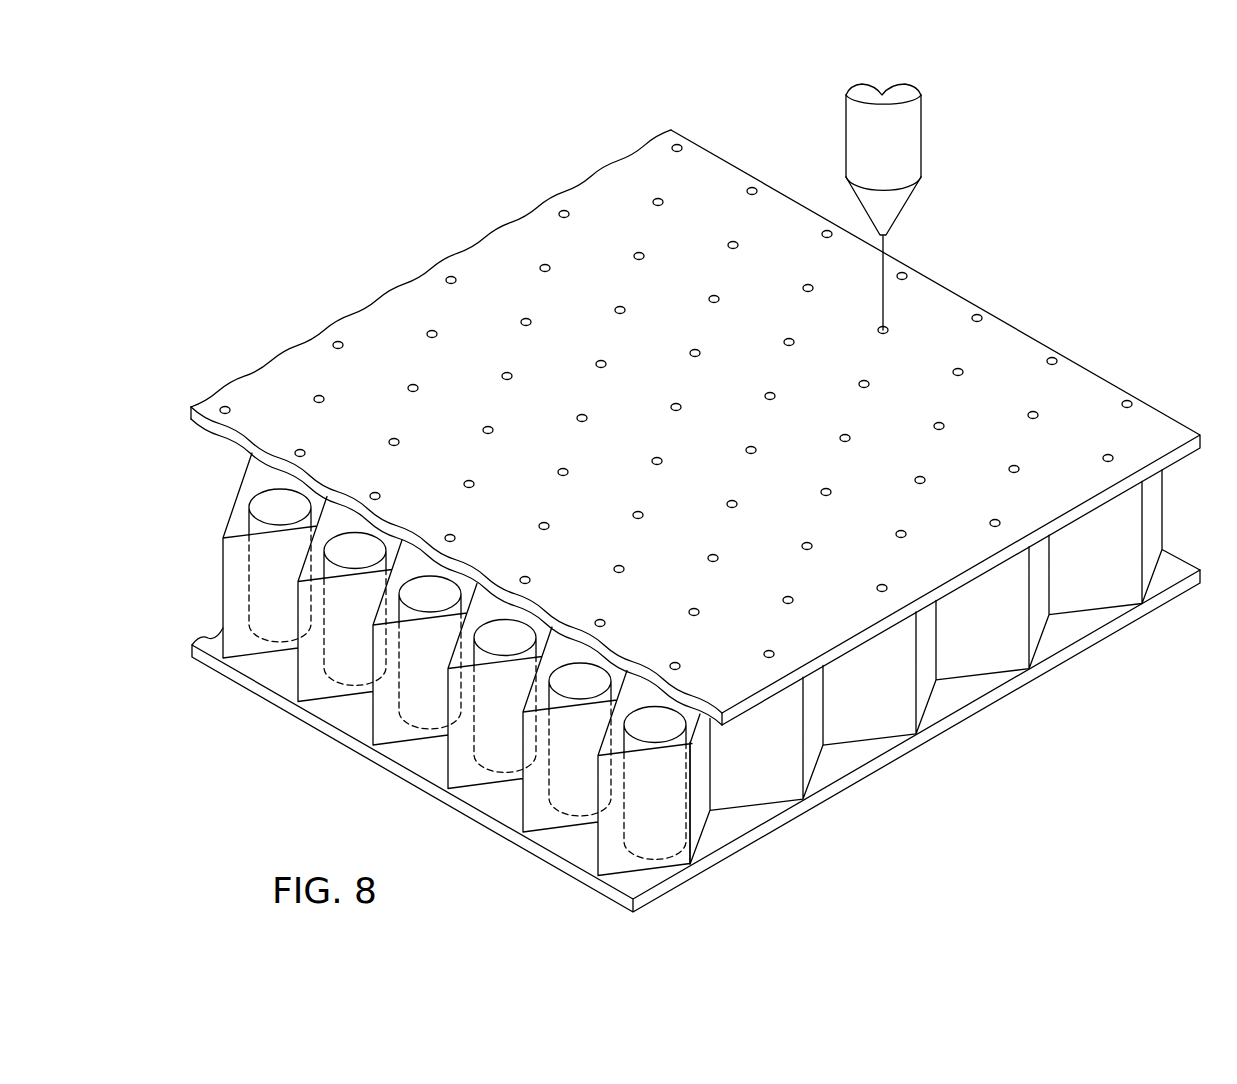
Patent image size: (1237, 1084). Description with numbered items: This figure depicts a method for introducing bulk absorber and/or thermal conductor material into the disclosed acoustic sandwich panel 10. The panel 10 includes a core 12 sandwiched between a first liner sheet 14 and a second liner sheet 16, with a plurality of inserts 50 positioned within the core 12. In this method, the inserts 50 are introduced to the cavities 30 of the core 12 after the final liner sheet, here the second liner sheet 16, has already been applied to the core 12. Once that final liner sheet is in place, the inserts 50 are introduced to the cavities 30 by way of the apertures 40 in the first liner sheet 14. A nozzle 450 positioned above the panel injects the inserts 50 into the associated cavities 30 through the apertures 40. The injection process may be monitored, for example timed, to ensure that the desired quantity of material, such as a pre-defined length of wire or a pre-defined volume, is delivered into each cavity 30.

The acoustic sandwich panel 10 is at (1116, 268).
The core 12 is at (1165, 511).
The first liner sheet 14 is at (1146, 419).
The second liner sheet 16 is at (1143, 616).
The cavities 30 is at (317, 505).
The apertures 40 is at (956, 375).
The inserts 50 is at (257, 574).
The nozzle 450 is at (922, 137).